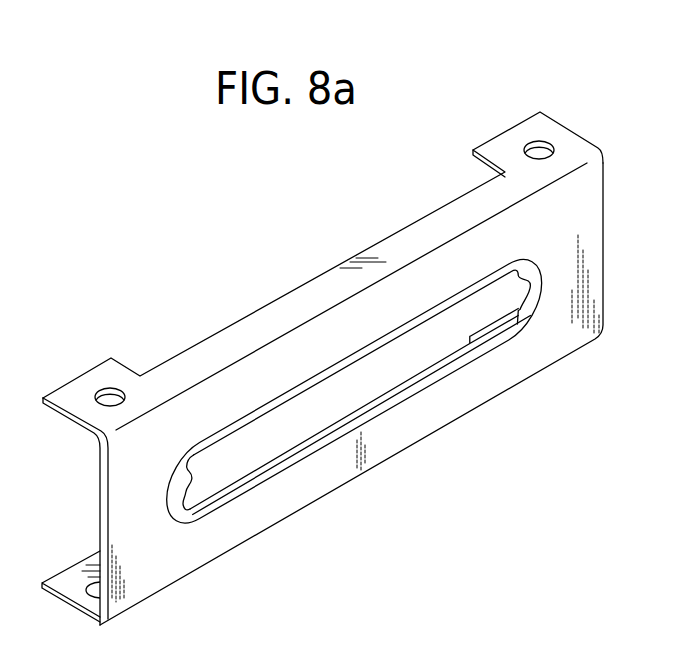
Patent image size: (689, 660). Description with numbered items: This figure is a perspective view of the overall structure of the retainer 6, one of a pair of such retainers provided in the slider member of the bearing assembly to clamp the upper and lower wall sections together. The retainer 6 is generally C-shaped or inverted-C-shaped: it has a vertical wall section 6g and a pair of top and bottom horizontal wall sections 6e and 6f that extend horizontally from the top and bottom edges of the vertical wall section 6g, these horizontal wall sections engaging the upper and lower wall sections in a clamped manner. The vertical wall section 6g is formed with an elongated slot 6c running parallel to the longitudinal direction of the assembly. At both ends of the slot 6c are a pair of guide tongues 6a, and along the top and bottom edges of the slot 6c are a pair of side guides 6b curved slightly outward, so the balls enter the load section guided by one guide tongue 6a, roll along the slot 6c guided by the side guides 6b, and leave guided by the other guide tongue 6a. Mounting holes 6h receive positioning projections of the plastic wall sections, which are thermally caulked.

The retainer 6 is at (403, 242).
The guide tongue 6a is at (185, 493).
The side guide 6b is at (405, 393).
The elongated slot 6c is at (365, 370).
The top horizontal wall section 6e is at (238, 348).
The bottom horizontal wall section 6f is at (72, 590).
The vertical wall section 6g is at (117, 502).
The mounting hole 6h is at (107, 391).